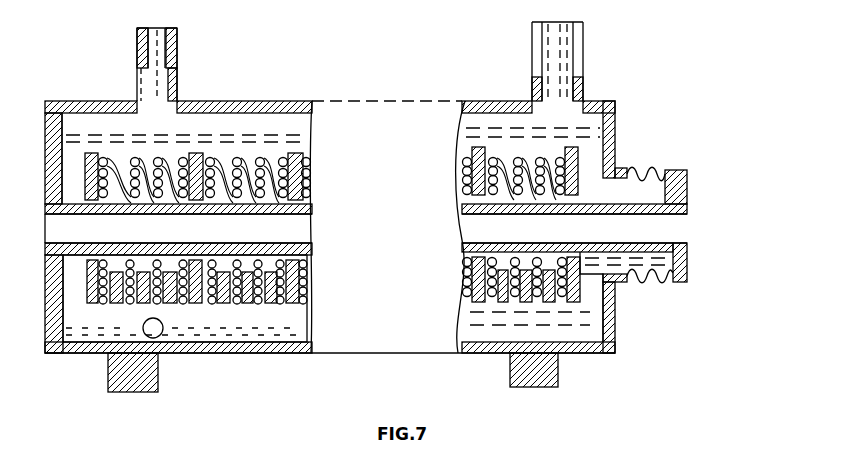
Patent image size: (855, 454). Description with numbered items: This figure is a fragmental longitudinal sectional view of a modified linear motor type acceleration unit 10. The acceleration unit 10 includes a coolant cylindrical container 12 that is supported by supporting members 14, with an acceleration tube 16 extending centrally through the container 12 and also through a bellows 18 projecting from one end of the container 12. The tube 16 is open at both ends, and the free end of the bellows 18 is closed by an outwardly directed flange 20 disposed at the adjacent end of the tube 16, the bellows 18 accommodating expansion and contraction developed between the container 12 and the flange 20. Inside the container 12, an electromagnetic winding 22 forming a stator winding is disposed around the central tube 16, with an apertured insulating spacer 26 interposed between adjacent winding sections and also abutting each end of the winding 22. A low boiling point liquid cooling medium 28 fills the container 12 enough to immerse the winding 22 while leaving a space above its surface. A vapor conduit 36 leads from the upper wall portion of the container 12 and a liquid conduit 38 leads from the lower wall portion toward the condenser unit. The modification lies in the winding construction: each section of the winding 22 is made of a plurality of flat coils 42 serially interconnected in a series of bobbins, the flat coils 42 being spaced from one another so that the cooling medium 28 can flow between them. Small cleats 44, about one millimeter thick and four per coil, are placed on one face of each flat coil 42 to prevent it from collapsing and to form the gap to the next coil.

The acceleration unit 10 is at (385, 387).
The coolant cylindrical container 12 is at (340, 100).
The supporting member 14 is at (558, 382).
The acceleration tube 16 is at (665, 212).
The bellows 18 is at (640, 172).
The outwardly directed flange 20 is at (689, 180).
The electromagnetic winding 22 is at (258, 335).
The insulating spacer 26 is at (95, 305).
The cooling medium 28 is at (641, 274).
The vapor conduit 36 is at (575, 63).
The liquid conduit 38 is at (170, 82).
The flat coil 42 is at (332, 302).
The small cleat 44 is at (165, 306).